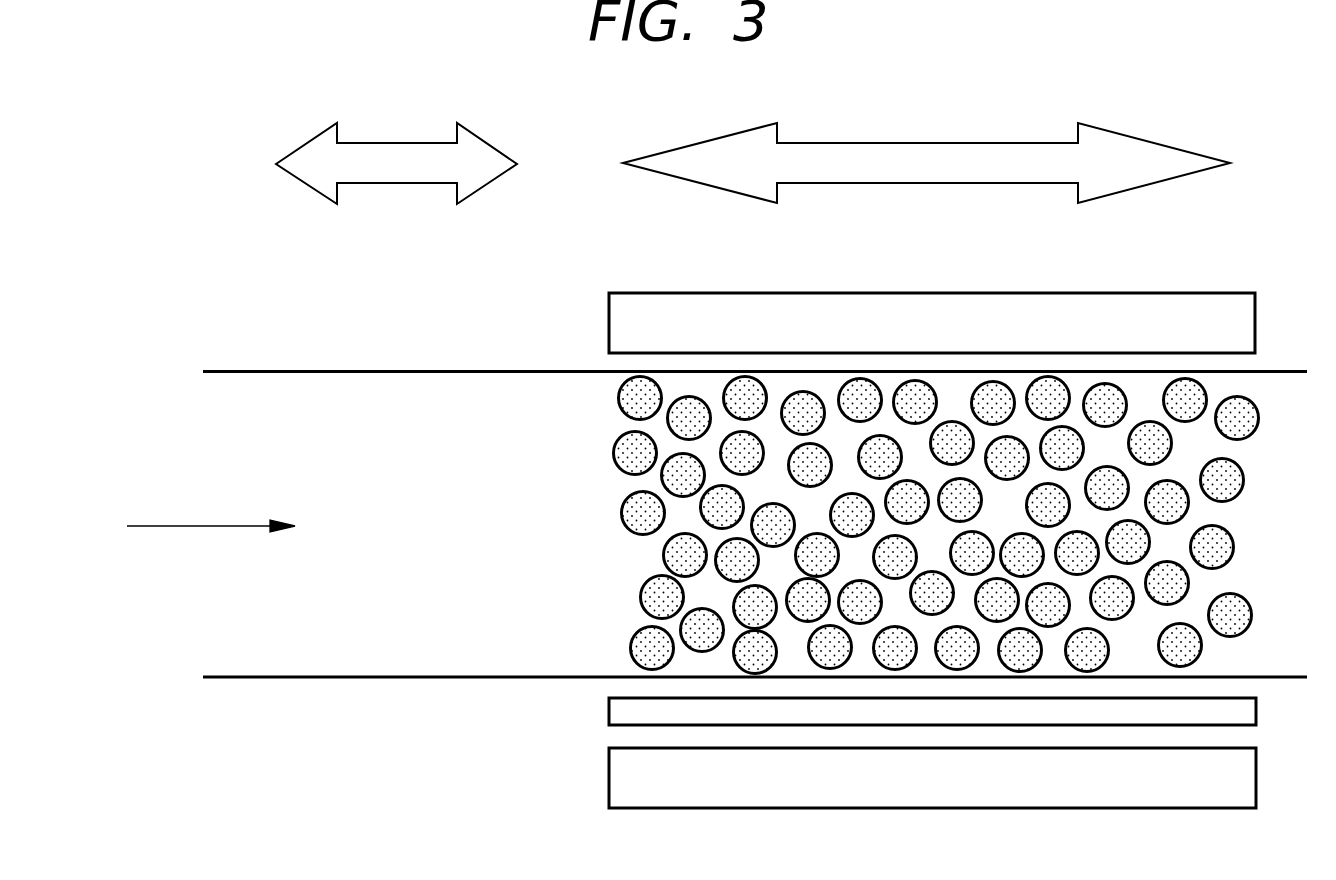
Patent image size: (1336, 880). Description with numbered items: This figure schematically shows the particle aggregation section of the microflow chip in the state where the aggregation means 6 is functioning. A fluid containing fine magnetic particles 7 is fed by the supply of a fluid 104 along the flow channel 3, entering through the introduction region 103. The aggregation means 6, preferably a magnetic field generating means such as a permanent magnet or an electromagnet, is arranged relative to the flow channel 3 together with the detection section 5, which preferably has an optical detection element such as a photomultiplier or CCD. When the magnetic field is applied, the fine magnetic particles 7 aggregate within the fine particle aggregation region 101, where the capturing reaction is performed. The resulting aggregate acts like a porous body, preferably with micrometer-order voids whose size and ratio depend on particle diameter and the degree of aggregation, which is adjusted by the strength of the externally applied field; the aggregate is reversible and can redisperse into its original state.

The flow channel 3 is at (462, 646).
The detection section 5 is at (1243, 710).
The aggregation means 6 is at (1117, 305).
The fine magnetic particles 7 is at (618, 399).
The fine particle aggregation region 101 is at (908, 142).
The introduction region 103 is at (402, 143).
The supply of a fluid 104 is at (162, 525).